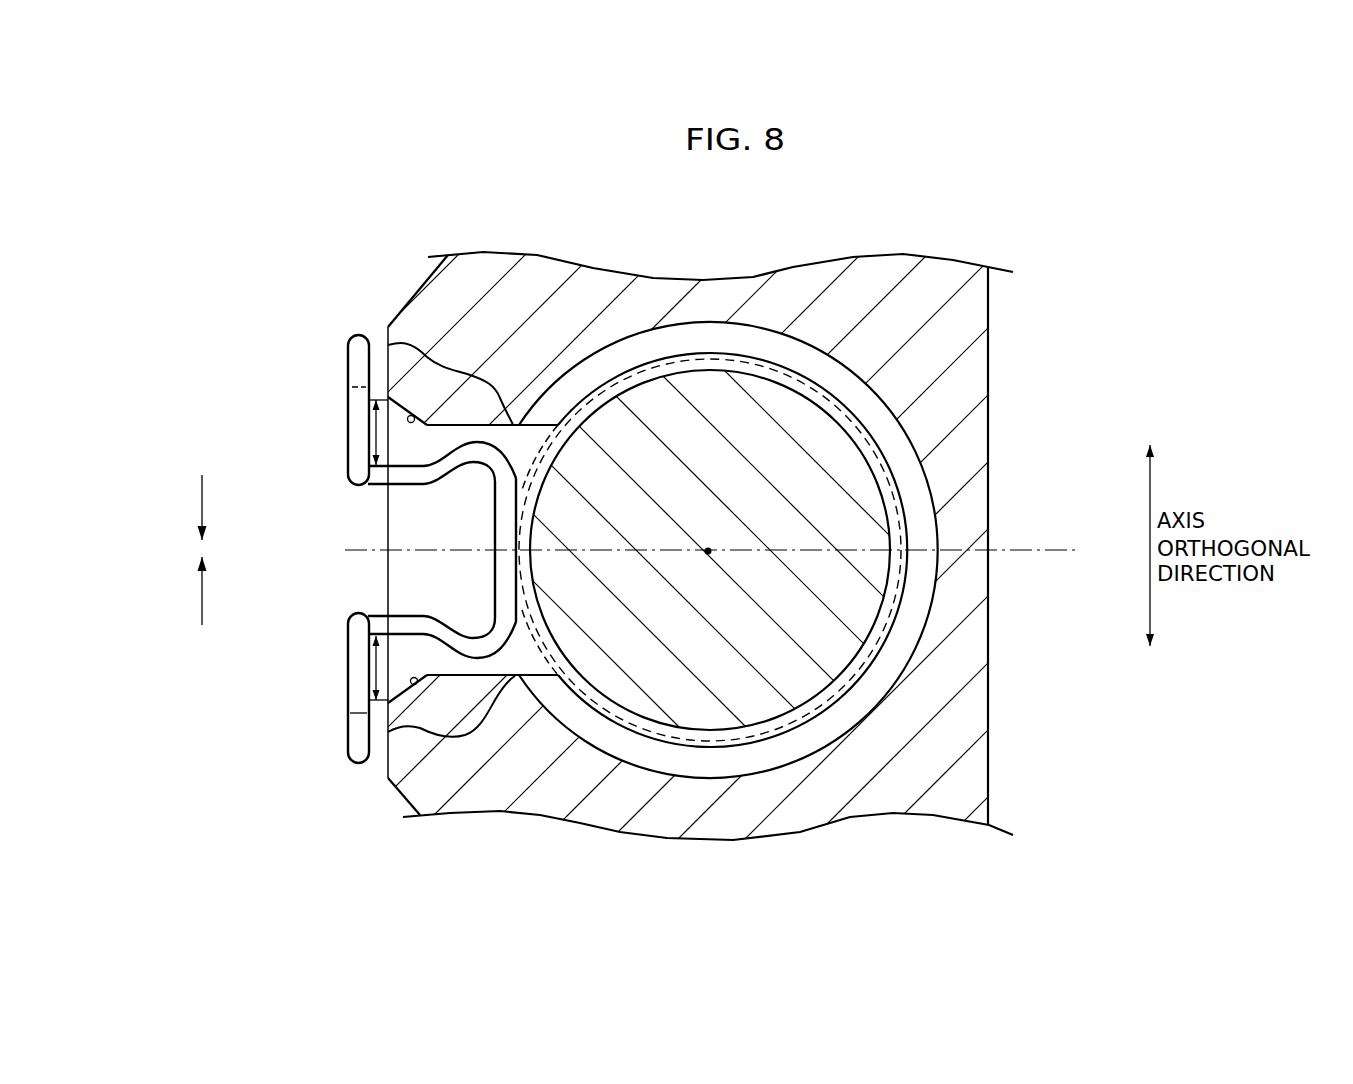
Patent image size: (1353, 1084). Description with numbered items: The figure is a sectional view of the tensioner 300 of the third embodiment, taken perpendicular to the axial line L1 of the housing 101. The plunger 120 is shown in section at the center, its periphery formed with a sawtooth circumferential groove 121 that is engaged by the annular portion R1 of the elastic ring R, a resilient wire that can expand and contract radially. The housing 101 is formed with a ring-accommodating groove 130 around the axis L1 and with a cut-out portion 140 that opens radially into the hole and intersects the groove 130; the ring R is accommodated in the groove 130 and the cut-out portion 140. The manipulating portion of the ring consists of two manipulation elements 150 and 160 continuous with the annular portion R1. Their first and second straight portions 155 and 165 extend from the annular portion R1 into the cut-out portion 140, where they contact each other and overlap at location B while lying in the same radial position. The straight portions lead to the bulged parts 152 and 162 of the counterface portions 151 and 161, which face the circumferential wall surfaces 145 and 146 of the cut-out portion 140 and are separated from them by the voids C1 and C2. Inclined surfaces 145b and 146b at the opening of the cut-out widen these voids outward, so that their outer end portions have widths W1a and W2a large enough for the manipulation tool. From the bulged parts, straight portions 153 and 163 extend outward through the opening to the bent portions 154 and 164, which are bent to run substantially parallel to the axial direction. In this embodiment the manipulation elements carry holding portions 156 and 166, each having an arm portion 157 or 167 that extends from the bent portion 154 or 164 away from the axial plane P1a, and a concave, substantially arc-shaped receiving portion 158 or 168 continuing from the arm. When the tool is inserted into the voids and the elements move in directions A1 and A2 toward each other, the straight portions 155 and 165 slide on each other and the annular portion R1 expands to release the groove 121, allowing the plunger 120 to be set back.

The tensioner 300 is at (1092, 258).
The housing 101 is at (676, 560).
The plunger 120 is at (703, 486).
The circumferential groove 121 is at (708, 371).
The ring-accommodating groove 130 is at (795, 350).
The cut-out portion 140 is at (482, 579).
The wall surface 145 is at (505, 672).
The inclined surface 145b is at (424, 677).
The wall surface 146 is at (505, 429).
The inclined surface 146b is at (413, 414).
The manipulation element 150 is at (331, 635).
The counterface portion 151 is at (297, 550).
The bulged part 152 is at (447, 626).
The straight portion 153 is at (410, 616).
The bent portion 154 is at (348, 625).
The straight portion 155 is at (503, 534).
The holding portion 156 is at (237, 690).
The arm portion 157 is at (355, 680).
The receiving portion 158 is at (357, 748).
The manipulation element 160 is at (331, 464).
The counterface portion 161 is at (297, 485).
The bulged part 162 is at (447, 474).
The straight portion 163 is at (407, 484).
The bent portion 164 is at (348, 478).
The straight portion 165 is at (490, 490).
The holding portion 166 is at (237, 347).
The arm portion 167 is at (355, 418).
The receiving portion 168 is at (352, 352).
The direction A1 is at (200, 595).
The direction A2 is at (200, 500).
The overlap location B is at (527, 570).
The void C1 is at (446, 666).
The void C2 is at (435, 440).
The axial line L1 is at (708, 551).
The axial plane P1a is at (1057, 549).
The elastic ring R is at (642, 745).
The annular portion R1 is at (905, 470).
The width of outer end portion of void C1 W1a is at (377, 675).
The width of outer end portion of void C2 W2a is at (387, 397).